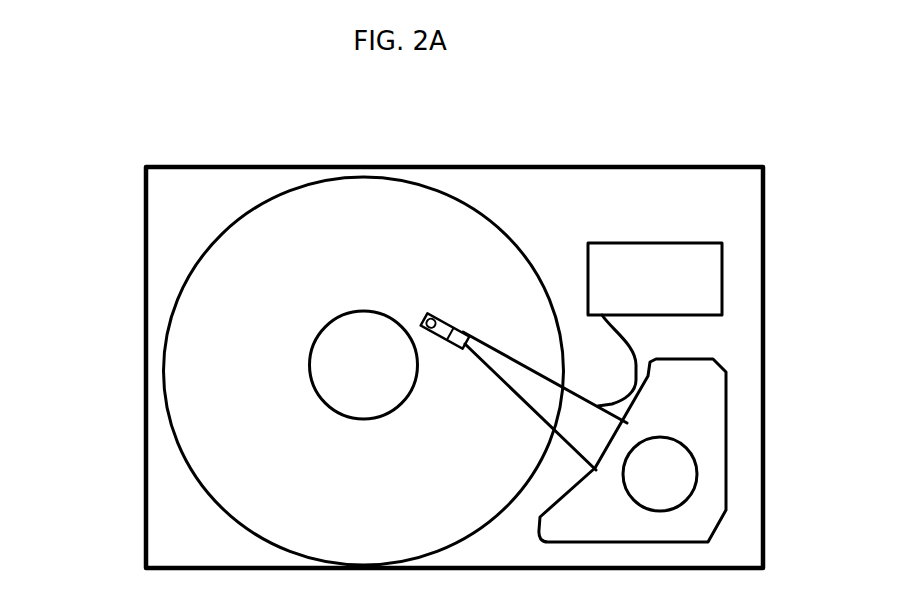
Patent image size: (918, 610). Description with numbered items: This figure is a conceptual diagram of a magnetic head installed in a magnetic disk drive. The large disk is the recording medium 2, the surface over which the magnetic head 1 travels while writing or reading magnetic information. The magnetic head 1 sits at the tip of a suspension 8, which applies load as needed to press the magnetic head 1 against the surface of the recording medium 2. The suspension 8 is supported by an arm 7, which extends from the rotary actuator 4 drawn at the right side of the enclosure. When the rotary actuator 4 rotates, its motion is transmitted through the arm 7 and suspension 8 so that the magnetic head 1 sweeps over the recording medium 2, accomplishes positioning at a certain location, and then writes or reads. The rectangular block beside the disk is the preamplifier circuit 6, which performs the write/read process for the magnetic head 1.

The magnetic head 1 is at (433, 320).
The recording medium 2 is at (203, 316).
The rotary actuator 4 is at (700, 437).
The preamplifier circuit 6 is at (687, 270).
The arm 7 is at (540, 397).
The suspension 8 is at (445, 337).